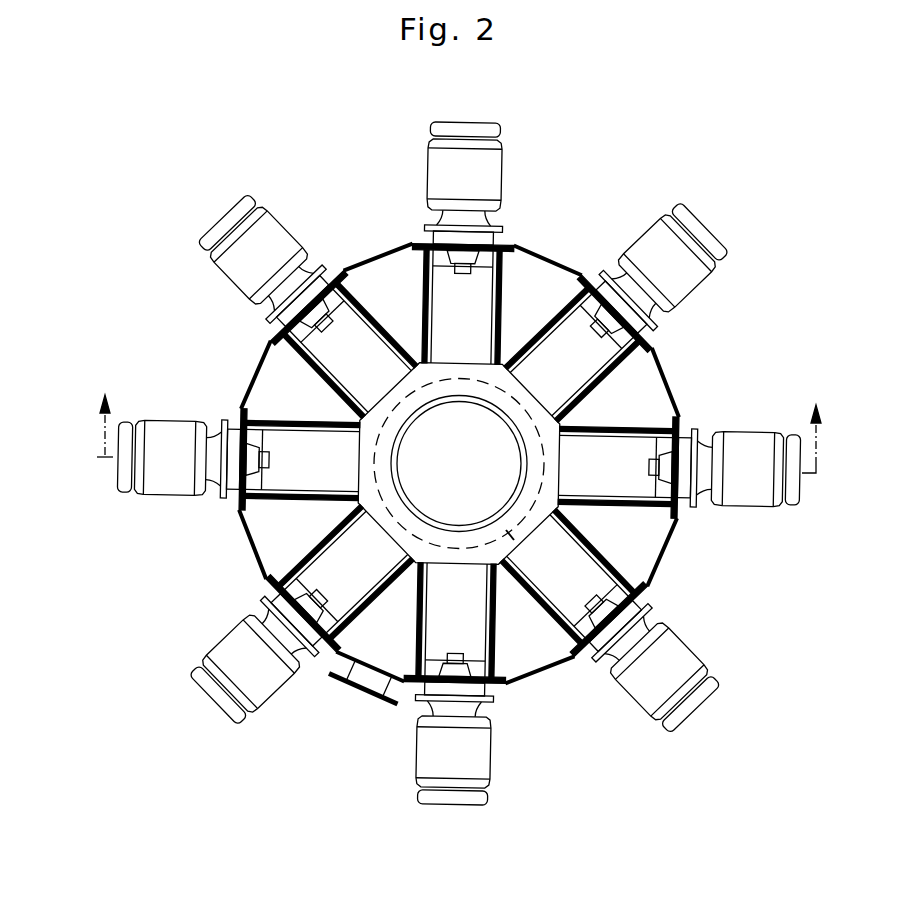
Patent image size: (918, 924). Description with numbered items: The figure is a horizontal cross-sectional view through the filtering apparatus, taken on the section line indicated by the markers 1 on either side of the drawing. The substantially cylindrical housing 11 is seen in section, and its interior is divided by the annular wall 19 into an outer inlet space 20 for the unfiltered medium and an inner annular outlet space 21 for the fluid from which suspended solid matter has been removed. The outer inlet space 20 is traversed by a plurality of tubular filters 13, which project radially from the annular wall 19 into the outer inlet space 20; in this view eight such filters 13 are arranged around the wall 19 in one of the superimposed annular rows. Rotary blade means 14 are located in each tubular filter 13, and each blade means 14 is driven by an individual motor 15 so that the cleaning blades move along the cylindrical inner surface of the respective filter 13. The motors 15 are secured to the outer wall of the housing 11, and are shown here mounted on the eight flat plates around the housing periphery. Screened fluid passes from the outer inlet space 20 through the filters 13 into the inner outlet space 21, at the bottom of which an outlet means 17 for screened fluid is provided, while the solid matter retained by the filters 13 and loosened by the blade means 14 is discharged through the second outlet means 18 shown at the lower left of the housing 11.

The section line I-I 1 is at (460, 439).
The housing 11 is at (549, 256).
The tubular filter 13 is at (502, 322).
The rotary blade means 14 is at (434, 328).
The motor 15 is at (491, 178).
The outlet means 17 is at (399, 478).
The second outlet means 18 is at (376, 686).
The annular wall 19 is at (540, 500).
The outer inlet space 20 is at (393, 297).
The inner annular outlet space 21 is at (510, 537).